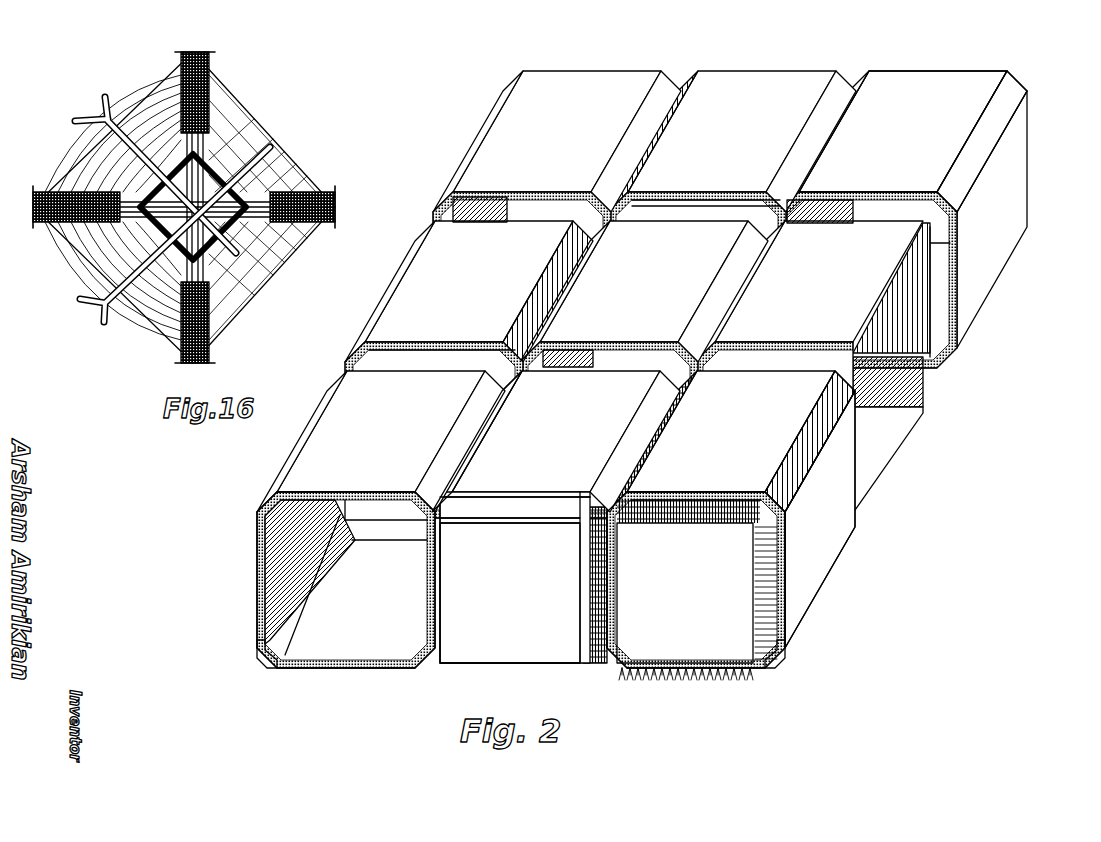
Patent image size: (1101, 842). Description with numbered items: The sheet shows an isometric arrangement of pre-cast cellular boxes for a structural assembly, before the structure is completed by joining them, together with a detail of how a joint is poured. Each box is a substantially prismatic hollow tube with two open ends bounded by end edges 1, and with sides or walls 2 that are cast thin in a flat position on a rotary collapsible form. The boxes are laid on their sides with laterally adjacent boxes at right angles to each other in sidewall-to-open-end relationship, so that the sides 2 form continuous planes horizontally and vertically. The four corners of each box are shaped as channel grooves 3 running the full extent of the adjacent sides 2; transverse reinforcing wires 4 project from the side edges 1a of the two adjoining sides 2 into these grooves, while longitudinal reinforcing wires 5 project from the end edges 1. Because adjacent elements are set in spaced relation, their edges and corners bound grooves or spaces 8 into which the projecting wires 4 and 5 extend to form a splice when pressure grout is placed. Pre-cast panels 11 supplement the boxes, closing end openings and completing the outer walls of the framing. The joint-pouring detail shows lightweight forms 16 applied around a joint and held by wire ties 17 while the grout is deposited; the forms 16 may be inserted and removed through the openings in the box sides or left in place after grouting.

In FIG. 2, the end edges 1 is at (262, 560).
In FIG. 2, the side edges 1a is at (473, 444).
In FIG. 2, the sides or walls 2 is at (260, 532).
In FIG. 2, the channel grooves 3 is at (268, 654).
In FIG. 2, the transverse reinforcing wires 4 is at (775, 499).
In FIG. 2, the longitudinal reinforcing wires 5 is at (750, 521).
In FIG. 2, the boundary grooves or spaces 8 is at (676, 90).
In FIG. 2, the pre-cast panels 11 is at (690, 567).
In FIG. 16, the forms 16 is at (88, 114).
In FIG. 16, the wire ties 17 is at (258, 286).